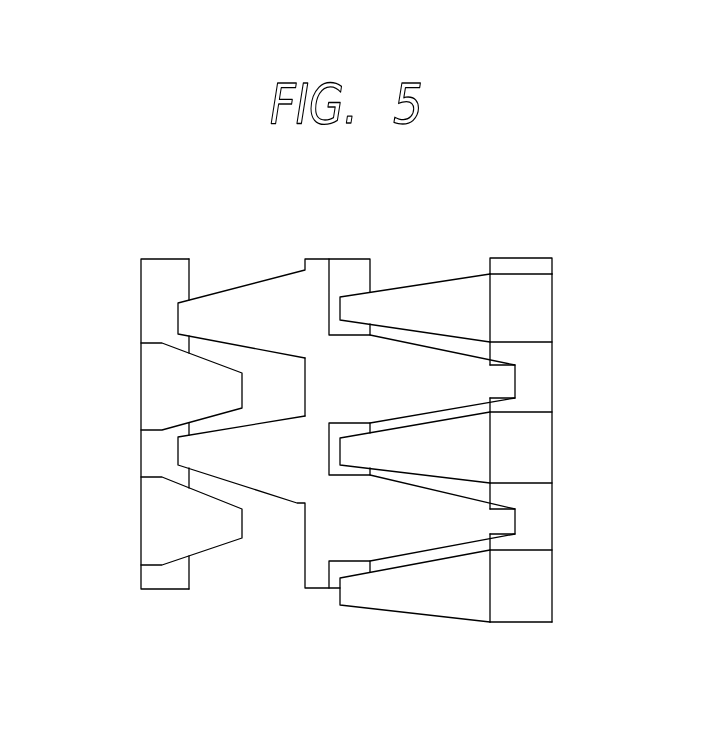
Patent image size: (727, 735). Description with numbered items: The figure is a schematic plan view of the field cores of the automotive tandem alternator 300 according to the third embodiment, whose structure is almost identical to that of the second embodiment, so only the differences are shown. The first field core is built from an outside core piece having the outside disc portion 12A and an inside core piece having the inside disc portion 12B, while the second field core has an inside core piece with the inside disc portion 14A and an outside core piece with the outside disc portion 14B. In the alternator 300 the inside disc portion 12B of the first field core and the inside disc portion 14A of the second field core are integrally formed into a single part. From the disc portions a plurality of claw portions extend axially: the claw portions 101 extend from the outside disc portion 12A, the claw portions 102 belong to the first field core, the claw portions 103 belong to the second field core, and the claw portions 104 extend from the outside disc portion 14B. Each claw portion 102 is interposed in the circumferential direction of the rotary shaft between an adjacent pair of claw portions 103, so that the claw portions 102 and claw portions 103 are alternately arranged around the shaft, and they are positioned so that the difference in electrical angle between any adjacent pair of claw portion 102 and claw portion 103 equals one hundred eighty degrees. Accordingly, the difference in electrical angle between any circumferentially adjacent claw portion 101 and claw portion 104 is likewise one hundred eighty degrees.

The automotive tandem alternator 300 is at (511, 213).
The outside disc portion 12A is at (157, 287).
The inside disc portion 12B is at (317, 288).
The inside disc portion 14A is at (367, 388).
The outside disc portion 14B is at (532, 263).
The claw portion 101 is at (202, 535).
The claw portion 102 is at (267, 480).
The claw portion 103 is at (397, 538).
The claw portion 104 is at (540, 450).